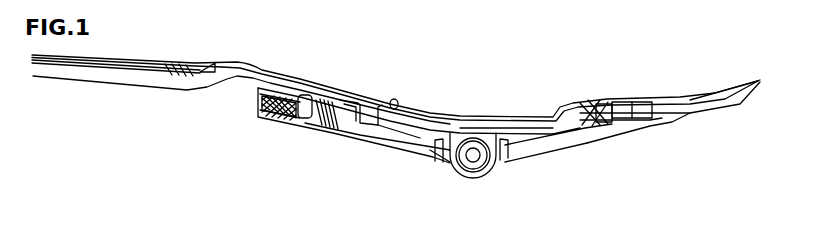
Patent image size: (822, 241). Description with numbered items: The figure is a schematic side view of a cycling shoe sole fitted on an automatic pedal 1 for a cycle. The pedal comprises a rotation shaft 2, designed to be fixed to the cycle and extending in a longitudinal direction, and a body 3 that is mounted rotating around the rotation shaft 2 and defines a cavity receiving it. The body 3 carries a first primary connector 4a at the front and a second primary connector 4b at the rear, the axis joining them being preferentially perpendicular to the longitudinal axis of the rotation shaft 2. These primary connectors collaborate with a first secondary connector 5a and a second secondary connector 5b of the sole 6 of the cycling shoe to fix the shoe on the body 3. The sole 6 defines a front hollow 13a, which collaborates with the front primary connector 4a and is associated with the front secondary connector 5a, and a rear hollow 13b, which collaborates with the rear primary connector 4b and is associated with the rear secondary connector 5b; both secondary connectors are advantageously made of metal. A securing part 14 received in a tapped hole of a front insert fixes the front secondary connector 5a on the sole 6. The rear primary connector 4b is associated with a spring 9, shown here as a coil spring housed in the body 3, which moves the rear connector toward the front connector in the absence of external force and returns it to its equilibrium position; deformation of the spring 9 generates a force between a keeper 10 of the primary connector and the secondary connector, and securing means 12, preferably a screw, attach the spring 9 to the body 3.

The automatic pedal 1 is at (584, 198).
The rotation shaft 2 is at (472, 160).
The body 3 is at (560, 150).
The first primary connector 4a is at (640, 106).
The second primary connector 4b is at (263, 86).
The first secondary connector 5a is at (596, 110).
The second secondary connector 5b is at (333, 107).
The sole 6 is at (545, 129).
The spring 9 is at (283, 118).
The keeper 10 is at (279, 106).
The securing means 12 is at (300, 118).
The front hollow 13a is at (664, 137).
The rear hollow 13b is at (225, 92).
The securing part 14 is at (590, 110).